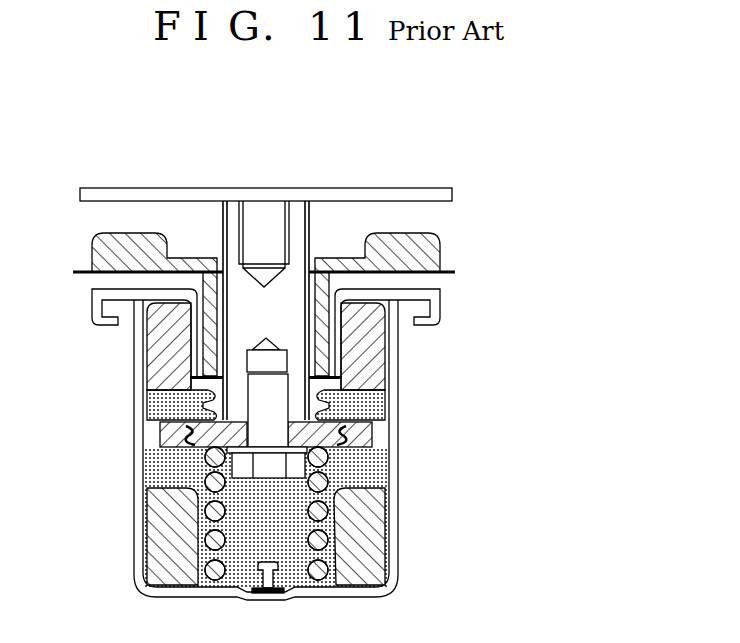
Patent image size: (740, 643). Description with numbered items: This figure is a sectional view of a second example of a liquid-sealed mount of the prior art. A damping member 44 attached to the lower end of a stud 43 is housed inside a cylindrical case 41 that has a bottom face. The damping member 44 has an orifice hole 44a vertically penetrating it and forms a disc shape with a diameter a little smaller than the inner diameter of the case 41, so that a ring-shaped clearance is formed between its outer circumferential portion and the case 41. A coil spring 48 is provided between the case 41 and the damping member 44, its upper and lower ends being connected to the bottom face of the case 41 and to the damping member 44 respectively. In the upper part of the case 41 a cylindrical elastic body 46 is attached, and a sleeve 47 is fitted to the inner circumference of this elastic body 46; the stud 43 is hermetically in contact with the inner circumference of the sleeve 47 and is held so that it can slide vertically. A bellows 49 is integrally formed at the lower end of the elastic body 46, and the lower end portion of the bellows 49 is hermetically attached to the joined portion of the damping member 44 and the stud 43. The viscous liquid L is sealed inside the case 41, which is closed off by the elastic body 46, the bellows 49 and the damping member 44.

The case 41 is at (396, 480).
The stud 43 is at (300, 219).
The damping member 44 is at (362, 437).
The orifice hole 44a is at (340, 408).
The elastic body 46 is at (320, 353).
The sleeve 47 is at (220, 351).
The coil spring 48 is at (323, 545).
The bellows 49 is at (153, 415).
The viscous liquid L is at (300, 522).